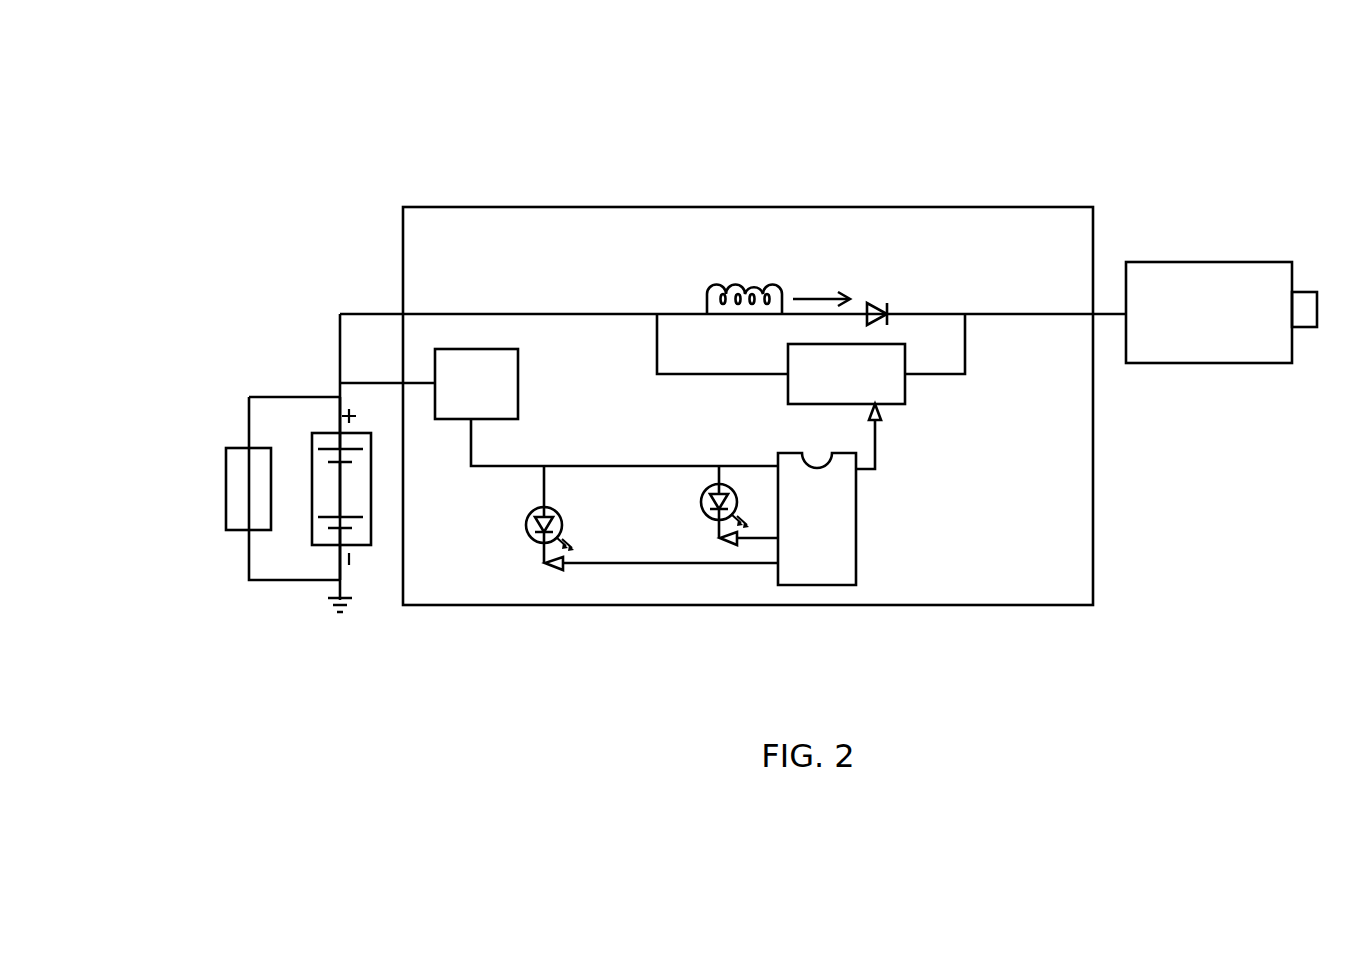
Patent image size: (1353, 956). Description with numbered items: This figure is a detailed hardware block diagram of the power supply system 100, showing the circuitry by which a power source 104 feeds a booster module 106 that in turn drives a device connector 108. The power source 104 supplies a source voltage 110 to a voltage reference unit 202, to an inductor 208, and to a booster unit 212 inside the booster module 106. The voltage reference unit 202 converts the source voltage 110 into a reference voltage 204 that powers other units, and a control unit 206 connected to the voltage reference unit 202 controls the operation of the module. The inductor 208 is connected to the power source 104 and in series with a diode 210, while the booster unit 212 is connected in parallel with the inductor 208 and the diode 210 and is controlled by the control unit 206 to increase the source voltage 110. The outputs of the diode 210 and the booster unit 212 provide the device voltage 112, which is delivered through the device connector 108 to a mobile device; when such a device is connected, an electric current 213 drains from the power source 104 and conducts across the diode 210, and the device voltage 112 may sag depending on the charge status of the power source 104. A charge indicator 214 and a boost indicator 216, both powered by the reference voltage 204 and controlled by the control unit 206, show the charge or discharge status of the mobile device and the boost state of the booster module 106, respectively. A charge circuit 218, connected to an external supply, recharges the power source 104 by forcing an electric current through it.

The power supply system 100 is at (199, 128).
The power source 104 is at (327, 485).
The booster module 106 is at (678, 178).
The device connector 108 is at (1221, 312).
The source voltage 110 is at (519, 312).
The device voltage 112 is at (1037, 312).
The voltage reference unit 202 is at (476, 384).
The reference voltage 204 is at (646, 465).
The control unit 206 is at (829, 494).
The inductor 208 is at (741, 272).
The diode 210 is at (890, 289).
The booster unit 212 is at (846, 374).
The electric current 213 is at (821, 289).
The charge indicator 214 is at (701, 500).
The boost indicator 216 is at (527, 519).
The charge circuit 218 is at (243, 475).